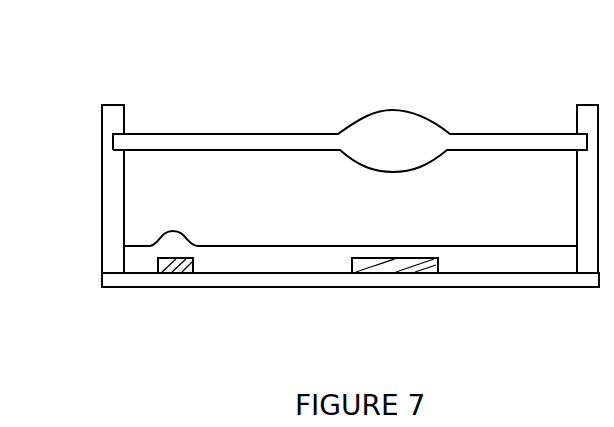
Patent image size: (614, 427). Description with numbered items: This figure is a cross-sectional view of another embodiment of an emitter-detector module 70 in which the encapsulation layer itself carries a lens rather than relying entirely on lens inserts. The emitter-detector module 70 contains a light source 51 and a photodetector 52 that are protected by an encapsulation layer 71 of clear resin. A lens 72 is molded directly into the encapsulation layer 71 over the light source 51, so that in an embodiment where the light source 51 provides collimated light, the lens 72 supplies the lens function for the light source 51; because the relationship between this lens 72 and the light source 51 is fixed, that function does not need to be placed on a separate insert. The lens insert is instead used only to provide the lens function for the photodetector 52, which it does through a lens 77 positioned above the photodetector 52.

The emitter-detector module 70 is at (77, 92).
The encapsulation layer 71 is at (285, 260).
The lens 72 is at (185, 237).
The lens 77 is at (408, 133).
The light source 51 is at (163, 272).
The photodetector 52 is at (366, 273).